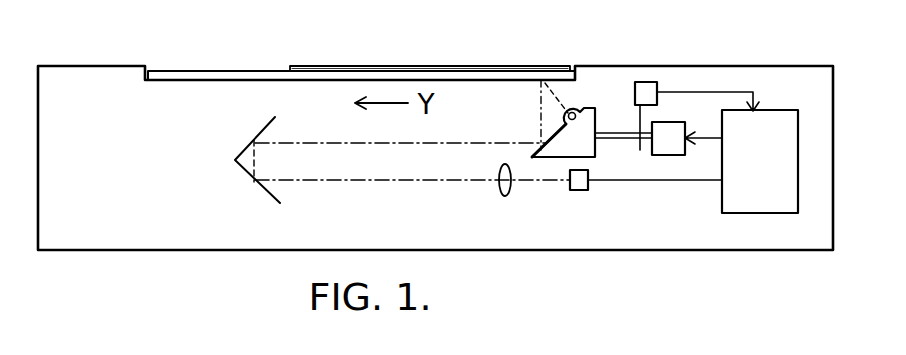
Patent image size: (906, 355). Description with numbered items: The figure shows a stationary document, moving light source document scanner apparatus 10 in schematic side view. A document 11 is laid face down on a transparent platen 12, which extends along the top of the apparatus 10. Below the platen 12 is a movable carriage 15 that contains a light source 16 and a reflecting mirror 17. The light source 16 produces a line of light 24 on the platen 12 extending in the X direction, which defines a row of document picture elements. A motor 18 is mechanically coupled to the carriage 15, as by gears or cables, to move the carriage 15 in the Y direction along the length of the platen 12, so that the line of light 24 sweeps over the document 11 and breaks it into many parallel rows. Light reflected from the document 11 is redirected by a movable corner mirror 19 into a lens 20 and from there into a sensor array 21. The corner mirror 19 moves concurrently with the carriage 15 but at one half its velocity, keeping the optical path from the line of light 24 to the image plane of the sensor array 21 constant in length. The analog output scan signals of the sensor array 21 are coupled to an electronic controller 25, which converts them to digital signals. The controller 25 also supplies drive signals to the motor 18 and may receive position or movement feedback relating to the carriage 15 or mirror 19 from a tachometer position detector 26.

The document scanner apparatus 10 is at (233, 48).
The document 11 is at (378, 66).
The transparent platen 12 is at (272, 68).
The movable carriage 15 is at (596, 118).
The light source 16 is at (593, 108).
The reflecting mirror 17 is at (538, 126).
The motor 18 is at (673, 128).
The movable corner mirror 19 is at (268, 195).
The lens 20 is at (500, 194).
The sensor array 21 is at (580, 190).
The line of light 24 is at (545, 79).
The electronic controller 25 is at (744, 168).
The tachometer position detector 26 is at (650, 84).